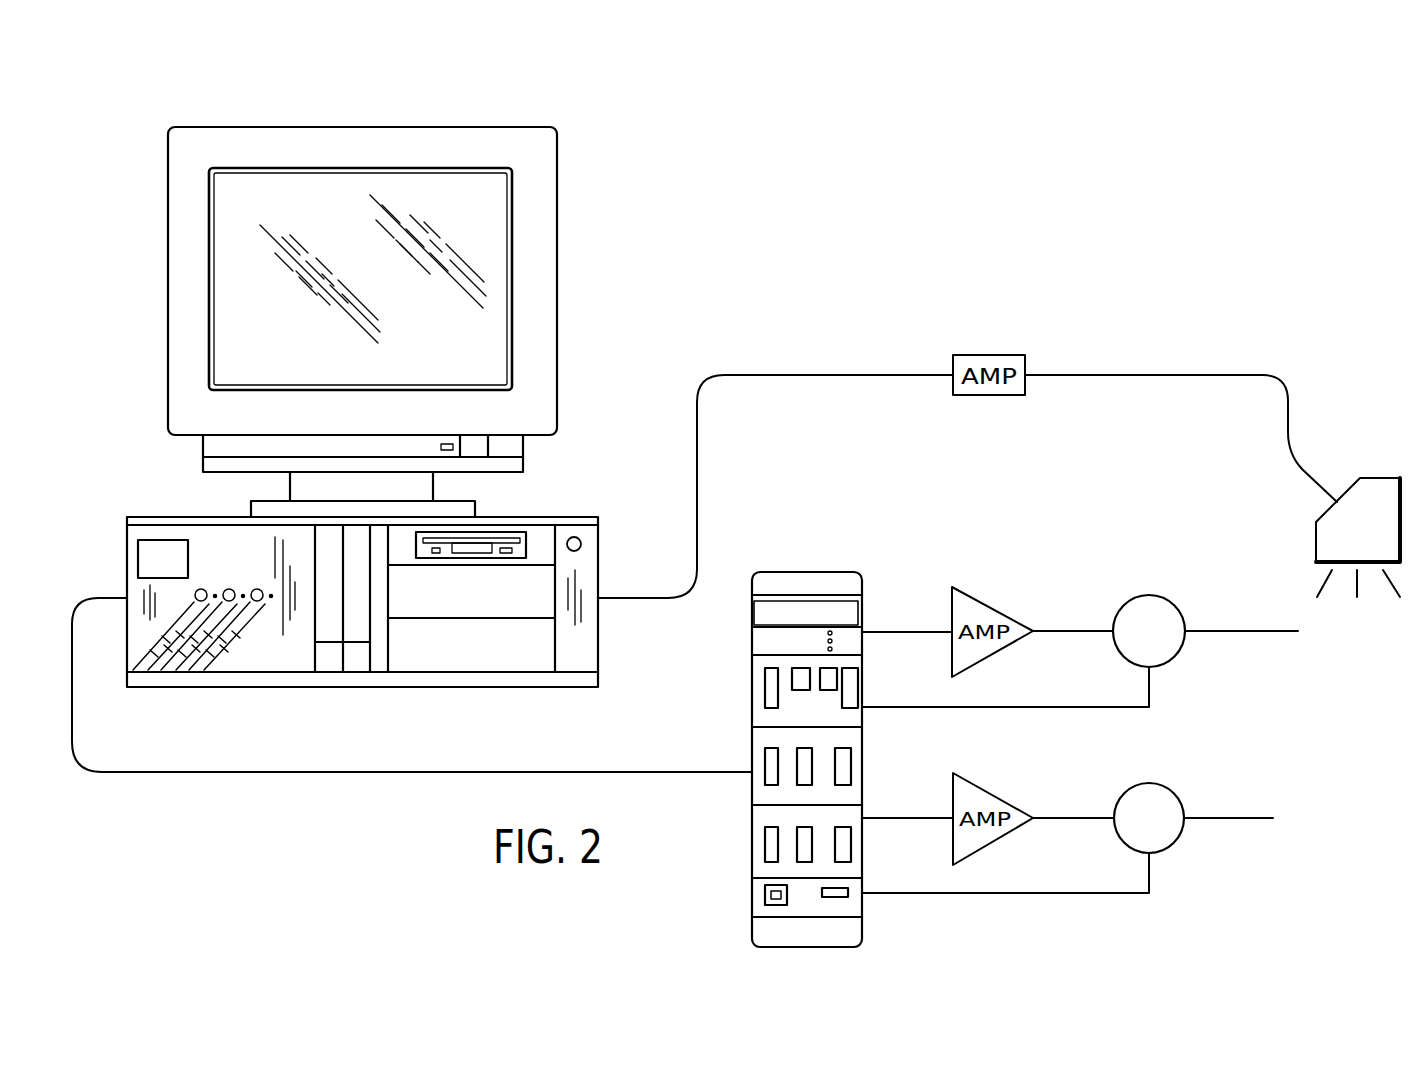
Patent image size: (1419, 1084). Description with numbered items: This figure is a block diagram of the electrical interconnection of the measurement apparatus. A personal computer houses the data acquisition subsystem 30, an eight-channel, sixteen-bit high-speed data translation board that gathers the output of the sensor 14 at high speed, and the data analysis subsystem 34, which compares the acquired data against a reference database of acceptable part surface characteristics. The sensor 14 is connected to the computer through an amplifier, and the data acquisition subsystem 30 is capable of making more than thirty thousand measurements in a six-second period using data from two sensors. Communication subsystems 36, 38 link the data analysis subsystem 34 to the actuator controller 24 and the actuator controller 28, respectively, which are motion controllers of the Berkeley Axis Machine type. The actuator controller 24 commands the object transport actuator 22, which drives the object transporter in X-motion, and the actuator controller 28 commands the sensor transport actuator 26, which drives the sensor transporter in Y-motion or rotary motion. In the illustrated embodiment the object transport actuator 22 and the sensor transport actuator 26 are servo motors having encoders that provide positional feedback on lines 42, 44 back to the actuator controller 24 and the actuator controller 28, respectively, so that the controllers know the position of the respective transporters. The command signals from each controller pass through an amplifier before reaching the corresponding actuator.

The sensor 14 is at (1361, 478).
The object transport actuator 22 is at (1168, 598).
The actuator controller 24 is at (843, 723).
The sensor transport actuator 26 is at (1172, 786).
The actuator controller 28 is at (808, 571).
The data acquisition subsystem 30 is at (775, 486).
The data analysis subsystem 34 is at (598, 516).
The communication subsystem 36 is at (412, 685).
The communication subsystem 38 is at (183, 772).
The positional feedback line 42 is at (1045, 707).
The positional feedback line 44 is at (1048, 893).